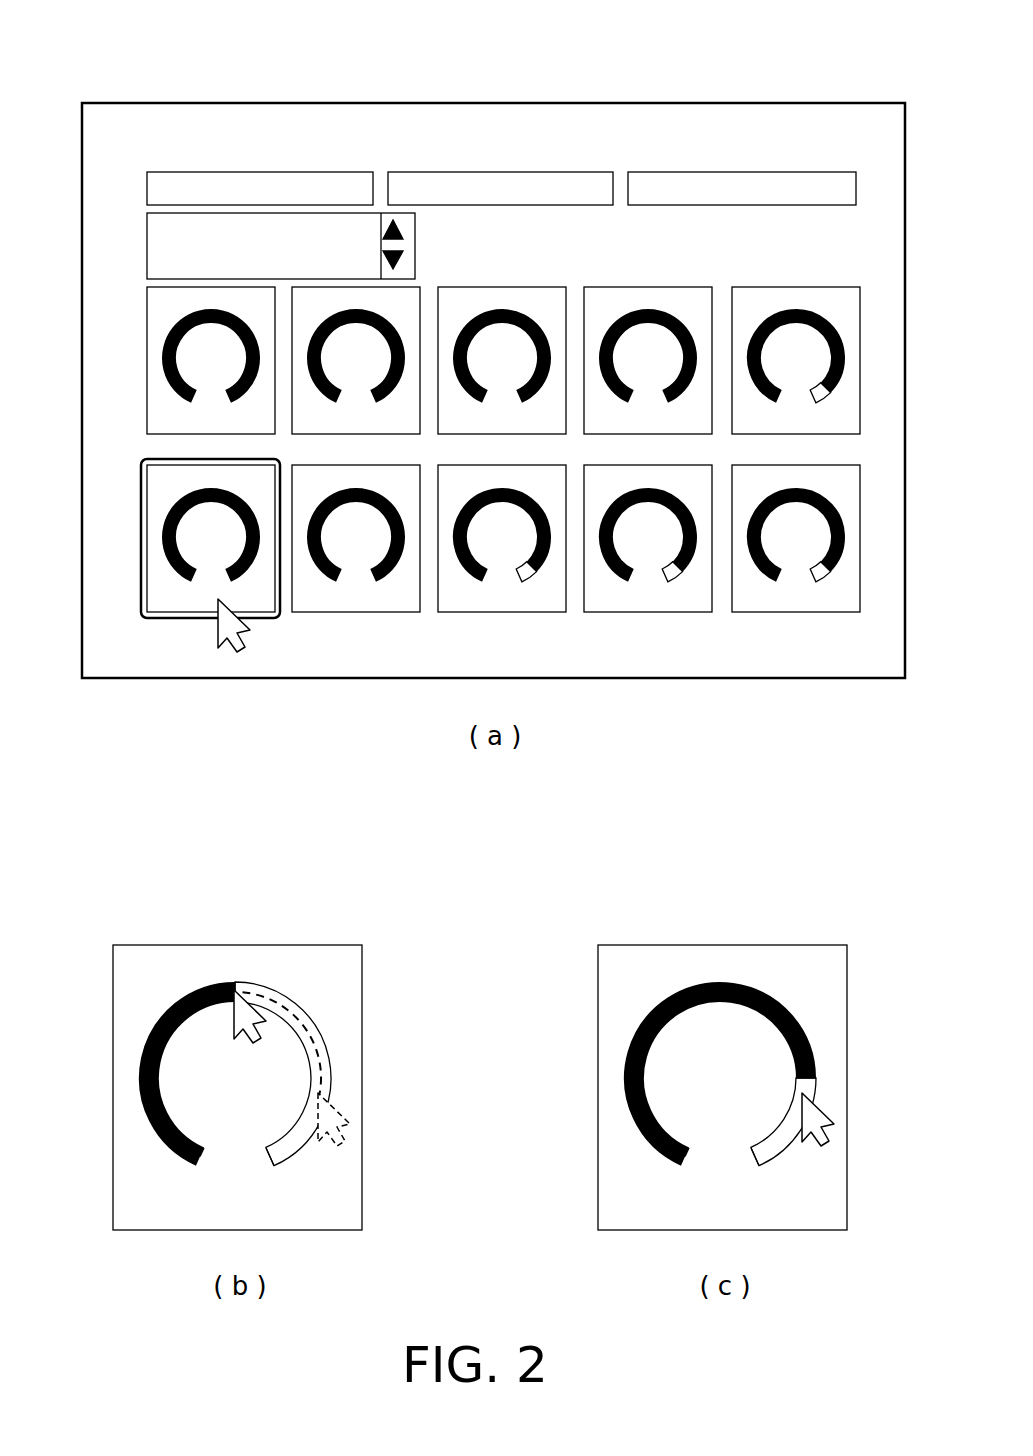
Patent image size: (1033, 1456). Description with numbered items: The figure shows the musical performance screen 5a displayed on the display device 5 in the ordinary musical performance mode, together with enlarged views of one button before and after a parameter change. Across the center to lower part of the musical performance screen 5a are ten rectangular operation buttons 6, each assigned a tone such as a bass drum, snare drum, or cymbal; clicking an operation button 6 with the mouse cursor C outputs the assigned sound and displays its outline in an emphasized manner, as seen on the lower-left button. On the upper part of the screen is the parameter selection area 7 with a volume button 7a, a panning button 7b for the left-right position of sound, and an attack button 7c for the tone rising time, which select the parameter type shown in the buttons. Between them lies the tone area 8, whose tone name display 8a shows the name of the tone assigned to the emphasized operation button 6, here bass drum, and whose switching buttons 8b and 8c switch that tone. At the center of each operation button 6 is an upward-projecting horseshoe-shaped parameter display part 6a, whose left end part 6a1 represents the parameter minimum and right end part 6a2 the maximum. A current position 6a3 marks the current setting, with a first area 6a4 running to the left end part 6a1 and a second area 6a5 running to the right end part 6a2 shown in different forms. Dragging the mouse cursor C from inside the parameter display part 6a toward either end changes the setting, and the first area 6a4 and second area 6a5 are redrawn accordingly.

The display device 5 is at (493, 363).
The musical performance screen 5a is at (802, 118).
The operation button 6 is at (462, 757).
The parameter display part 6a is at (435, 796).
The left end part 6a1 is at (198, 1177).
The right end part 6a2 is at (272, 1178).
The current position 6a3 is at (237, 987).
The first area 6a4 is at (140, 1088).
The second area 6a5 is at (285, 1022).
The parameter selection area 7 is at (501, 108).
The volume button 7a is at (362, 182).
The panning button 7b is at (577, 185).
The attack button 7c is at (742, 131).
The tone area 8 is at (296, 221).
The tone name display 8a is at (152, 246).
The switching button 8b is at (403, 232).
The switching button 8c is at (403, 258).
The mouse cursor C is at (253, 631).